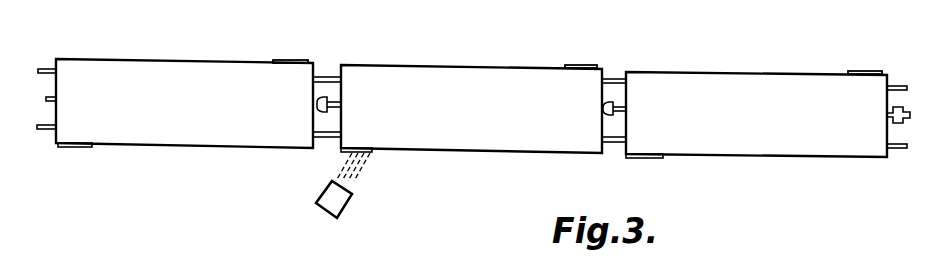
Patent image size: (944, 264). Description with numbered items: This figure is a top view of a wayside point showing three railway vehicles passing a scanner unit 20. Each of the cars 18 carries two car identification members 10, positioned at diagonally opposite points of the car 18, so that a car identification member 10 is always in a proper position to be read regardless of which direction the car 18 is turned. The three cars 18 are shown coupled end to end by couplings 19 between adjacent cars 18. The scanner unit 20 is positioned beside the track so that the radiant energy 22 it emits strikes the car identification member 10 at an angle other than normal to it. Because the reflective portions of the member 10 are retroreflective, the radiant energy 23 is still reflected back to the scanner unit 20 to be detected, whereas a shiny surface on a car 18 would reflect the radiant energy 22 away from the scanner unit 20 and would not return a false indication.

The car identification member 10 is at (80, 146).
The car 18 is at (168, 60).
The coupling 19 is at (326, 70).
The scanner unit 20 is at (316, 203).
The radiant energy 22 is at (350, 184).
The radiant energy 23 is at (398, 183).